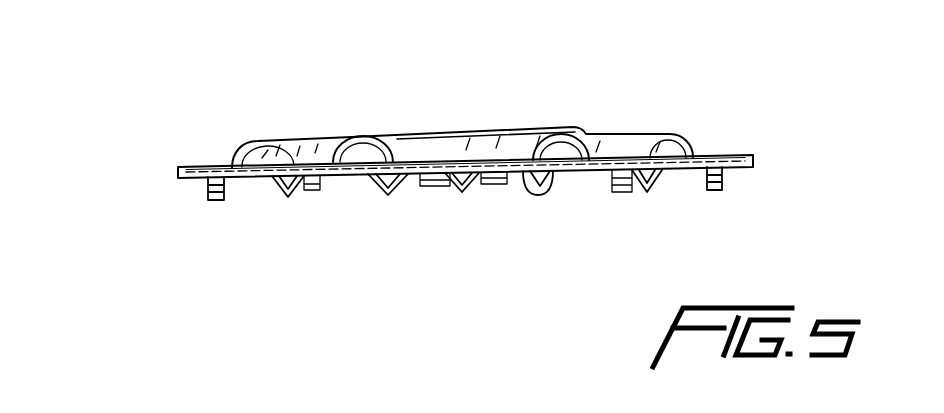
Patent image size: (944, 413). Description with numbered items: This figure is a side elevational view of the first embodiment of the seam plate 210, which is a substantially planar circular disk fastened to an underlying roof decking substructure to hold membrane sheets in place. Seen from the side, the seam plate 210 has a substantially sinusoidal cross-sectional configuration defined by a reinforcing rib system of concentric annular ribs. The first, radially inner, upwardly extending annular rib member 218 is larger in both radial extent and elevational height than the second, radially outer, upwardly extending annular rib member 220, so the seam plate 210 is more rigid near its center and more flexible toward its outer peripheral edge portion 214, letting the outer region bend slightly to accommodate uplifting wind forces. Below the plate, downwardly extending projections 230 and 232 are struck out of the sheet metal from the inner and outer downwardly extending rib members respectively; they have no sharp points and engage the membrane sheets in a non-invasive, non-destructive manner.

The seam plate 210 is at (777, 142).
The outer peripheral edge portion 214 is at (178, 176).
The first radially inner upwardly extending annular rib member 218 is at (367, 134).
The second radially outer upwardly extending annular rib member 220 is at (245, 143).
The downwardly extending projections 230 is at (306, 198).
The downwardly extending projections 232 is at (213, 200).